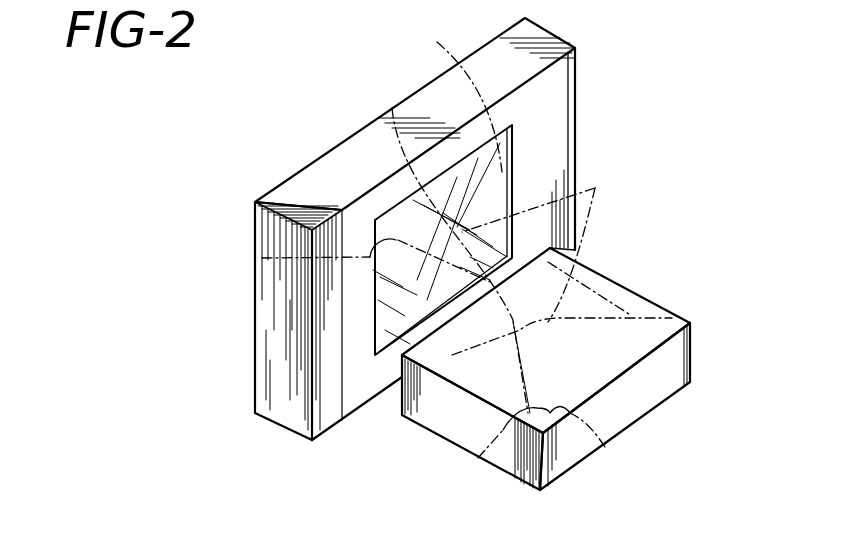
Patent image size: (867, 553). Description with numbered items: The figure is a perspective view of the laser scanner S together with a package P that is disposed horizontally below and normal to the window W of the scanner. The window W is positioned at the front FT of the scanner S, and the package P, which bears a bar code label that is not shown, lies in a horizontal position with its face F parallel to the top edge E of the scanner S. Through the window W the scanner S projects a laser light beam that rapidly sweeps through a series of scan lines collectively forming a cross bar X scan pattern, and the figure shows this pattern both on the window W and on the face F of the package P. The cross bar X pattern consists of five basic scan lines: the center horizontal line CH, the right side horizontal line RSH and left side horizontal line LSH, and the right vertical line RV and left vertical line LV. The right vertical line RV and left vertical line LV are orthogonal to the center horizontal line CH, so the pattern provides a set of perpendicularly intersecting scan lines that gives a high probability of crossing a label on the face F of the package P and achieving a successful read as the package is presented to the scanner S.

The top edge E is at (352, 198).
The window W is at (507, 170).
The right vertical line RV is at (595, 188).
The left vertical line LV is at (392, 108).
The right side horizontal line RSH is at (645, 318).
The left side horizontal line LSH is at (262, 258).
The face F is at (595, 278).
The front FT is at (328, 343).
The laser scanner S is at (318, 445).
The center horizontal line CH is at (397, 384).
The package P is at (508, 484).